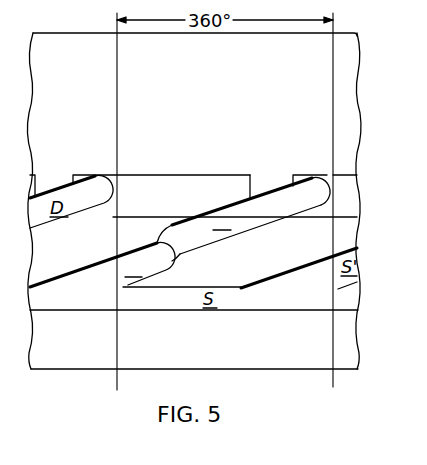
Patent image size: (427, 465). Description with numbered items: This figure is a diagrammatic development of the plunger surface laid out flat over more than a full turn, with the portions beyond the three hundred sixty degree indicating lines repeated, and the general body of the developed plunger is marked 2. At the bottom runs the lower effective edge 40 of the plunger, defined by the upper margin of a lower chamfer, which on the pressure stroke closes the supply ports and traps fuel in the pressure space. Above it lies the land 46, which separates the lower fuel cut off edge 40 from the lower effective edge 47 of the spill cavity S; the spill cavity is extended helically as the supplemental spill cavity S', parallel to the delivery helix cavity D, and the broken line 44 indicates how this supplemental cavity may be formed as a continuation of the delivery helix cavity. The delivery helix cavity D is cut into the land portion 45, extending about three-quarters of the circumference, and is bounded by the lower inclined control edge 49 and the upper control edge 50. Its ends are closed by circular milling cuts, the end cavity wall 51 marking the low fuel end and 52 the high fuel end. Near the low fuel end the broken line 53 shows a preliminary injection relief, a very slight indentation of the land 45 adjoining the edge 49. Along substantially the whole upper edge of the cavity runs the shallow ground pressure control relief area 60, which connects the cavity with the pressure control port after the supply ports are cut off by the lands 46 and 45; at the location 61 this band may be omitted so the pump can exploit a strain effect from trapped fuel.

The body 2 is at (165, 103).
The lower effective edge 40 is at (291, 370).
The continuation of the delivery helix cavity 44 is at (157, 232).
The land portion 45 is at (303, 146).
The land 46 is at (232, 352).
The lower effective edge of the spill cavity 47 is at (287, 302).
The lower inclined control edge 49 is at (282, 216).
The upper control edge 50 is at (268, 193).
The end cavity wall 51 is at (325, 194).
The high fuel end 52 is at (285, 215).
The preliminary injection relief 53 is at (273, 228).
The pressure control relief area 60 is at (176, 181).
The location where the band is omitted 61 is at (262, 191).